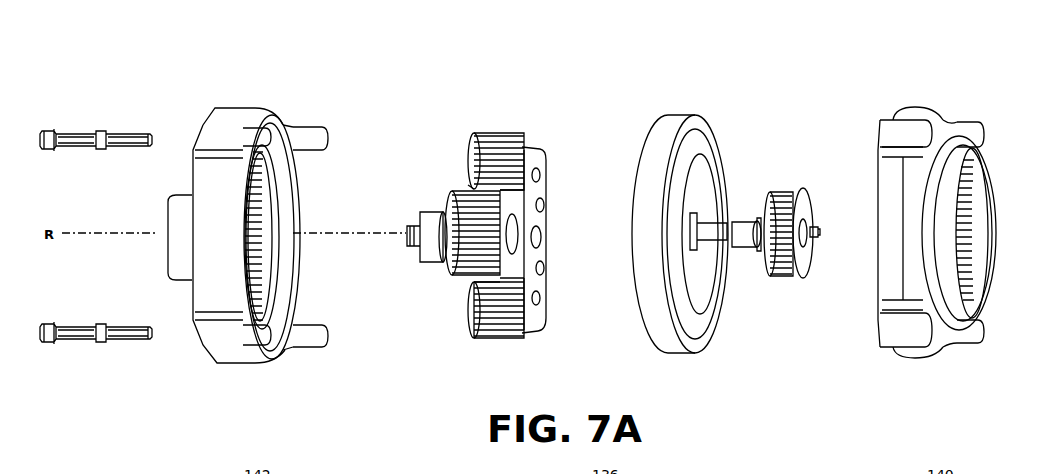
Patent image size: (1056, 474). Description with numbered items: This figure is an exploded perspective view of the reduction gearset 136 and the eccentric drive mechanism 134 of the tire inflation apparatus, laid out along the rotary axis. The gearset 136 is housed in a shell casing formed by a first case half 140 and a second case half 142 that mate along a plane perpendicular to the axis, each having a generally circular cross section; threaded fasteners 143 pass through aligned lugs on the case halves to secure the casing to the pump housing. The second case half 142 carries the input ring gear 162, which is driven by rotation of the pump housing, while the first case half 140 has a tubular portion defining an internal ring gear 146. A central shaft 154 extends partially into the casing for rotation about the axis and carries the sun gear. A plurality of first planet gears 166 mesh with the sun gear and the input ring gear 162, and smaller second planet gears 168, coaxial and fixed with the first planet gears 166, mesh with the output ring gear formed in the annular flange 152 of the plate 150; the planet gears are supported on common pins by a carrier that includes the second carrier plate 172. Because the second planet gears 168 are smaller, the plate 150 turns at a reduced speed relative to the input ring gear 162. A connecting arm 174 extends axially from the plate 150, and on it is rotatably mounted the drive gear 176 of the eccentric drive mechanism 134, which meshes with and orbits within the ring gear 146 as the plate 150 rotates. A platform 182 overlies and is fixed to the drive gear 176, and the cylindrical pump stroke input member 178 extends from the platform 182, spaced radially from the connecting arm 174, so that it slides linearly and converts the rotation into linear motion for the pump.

The eccentric drive mechanism 134 is at (812, 179).
The gearset 136 is at (576, 103).
The first case half 140 is at (956, 199).
The second case half 142 is at (272, 226).
The threaded fasteners 143 is at (126, 148).
The internal ring gear 146 is at (992, 270).
The plate 150 is at (692, 272).
The annular flange 152 is at (657, 312).
The central shaft 154 is at (408, 246).
The input ring gear 162 is at (300, 325).
The first planet gears 166 is at (473, 325).
The second planet gears 168 is at (522, 132).
The second carrier plate 172 is at (540, 308).
The connecting arm 174 is at (713, 230).
The drive gear 176 is at (780, 197).
The pump stroke input member 178 is at (816, 240).
The platform 182 is at (808, 274).